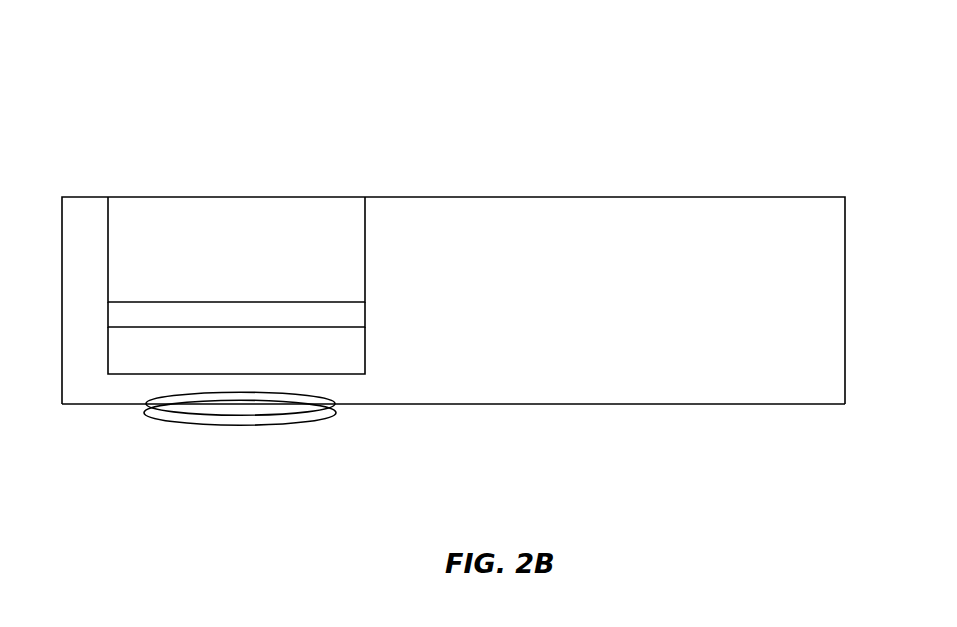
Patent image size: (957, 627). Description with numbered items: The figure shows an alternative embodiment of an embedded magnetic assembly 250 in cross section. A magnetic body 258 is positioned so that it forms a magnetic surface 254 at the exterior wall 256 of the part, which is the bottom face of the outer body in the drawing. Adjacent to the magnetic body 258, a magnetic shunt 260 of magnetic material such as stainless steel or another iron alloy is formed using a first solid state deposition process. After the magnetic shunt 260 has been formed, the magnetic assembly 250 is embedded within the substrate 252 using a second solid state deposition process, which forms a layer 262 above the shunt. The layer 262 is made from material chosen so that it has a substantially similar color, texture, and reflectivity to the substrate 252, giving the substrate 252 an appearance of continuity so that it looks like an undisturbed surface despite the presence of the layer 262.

The magnetic assembly 250 is at (156, 164).
The substrate 252 is at (794, 238).
The magnetic surface 254 is at (213, 447).
The exterior wall 256 is at (602, 405).
The magnetic body 258 is at (366, 353).
The magnetic shunt 260 is at (366, 312).
The layer 262 is at (366, 247).